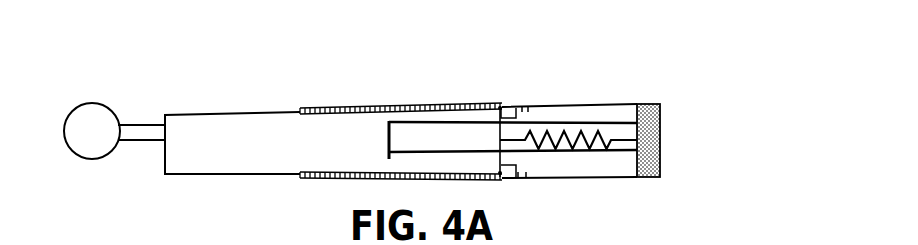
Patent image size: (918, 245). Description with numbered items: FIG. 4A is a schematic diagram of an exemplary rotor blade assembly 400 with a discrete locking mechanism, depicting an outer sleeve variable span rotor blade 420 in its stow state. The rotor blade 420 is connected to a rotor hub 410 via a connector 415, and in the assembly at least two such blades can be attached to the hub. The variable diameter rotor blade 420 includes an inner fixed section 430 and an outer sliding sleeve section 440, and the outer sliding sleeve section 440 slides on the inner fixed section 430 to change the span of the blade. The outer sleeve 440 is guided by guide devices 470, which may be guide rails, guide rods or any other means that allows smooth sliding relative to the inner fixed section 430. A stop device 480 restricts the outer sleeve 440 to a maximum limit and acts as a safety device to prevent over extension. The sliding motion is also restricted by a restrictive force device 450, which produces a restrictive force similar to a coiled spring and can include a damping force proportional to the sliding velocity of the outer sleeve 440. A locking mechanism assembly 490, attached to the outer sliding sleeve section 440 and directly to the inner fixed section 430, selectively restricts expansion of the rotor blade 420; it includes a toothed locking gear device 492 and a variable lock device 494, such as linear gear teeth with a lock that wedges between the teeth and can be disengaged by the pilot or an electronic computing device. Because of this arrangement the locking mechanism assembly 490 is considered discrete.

The rotor blade assembly 400 is at (676, 78).
The rotor hub 410 is at (84, 103).
The connector 415 is at (145, 122).
The variable span rotor blade 420 is at (652, 53).
The inner fixed section 430 is at (213, 115).
The outer sliding sleeve section 440 is at (577, 103).
The restrictive force device 450 is at (590, 152).
The guide devices 470 is at (452, 126).
The stop device 480 is at (385, 134).
The locking mechanism assembly 490 is at (450, 93).
The toothed locking gear device 492 is at (525, 111).
The variable lock device 494 is at (500, 104).